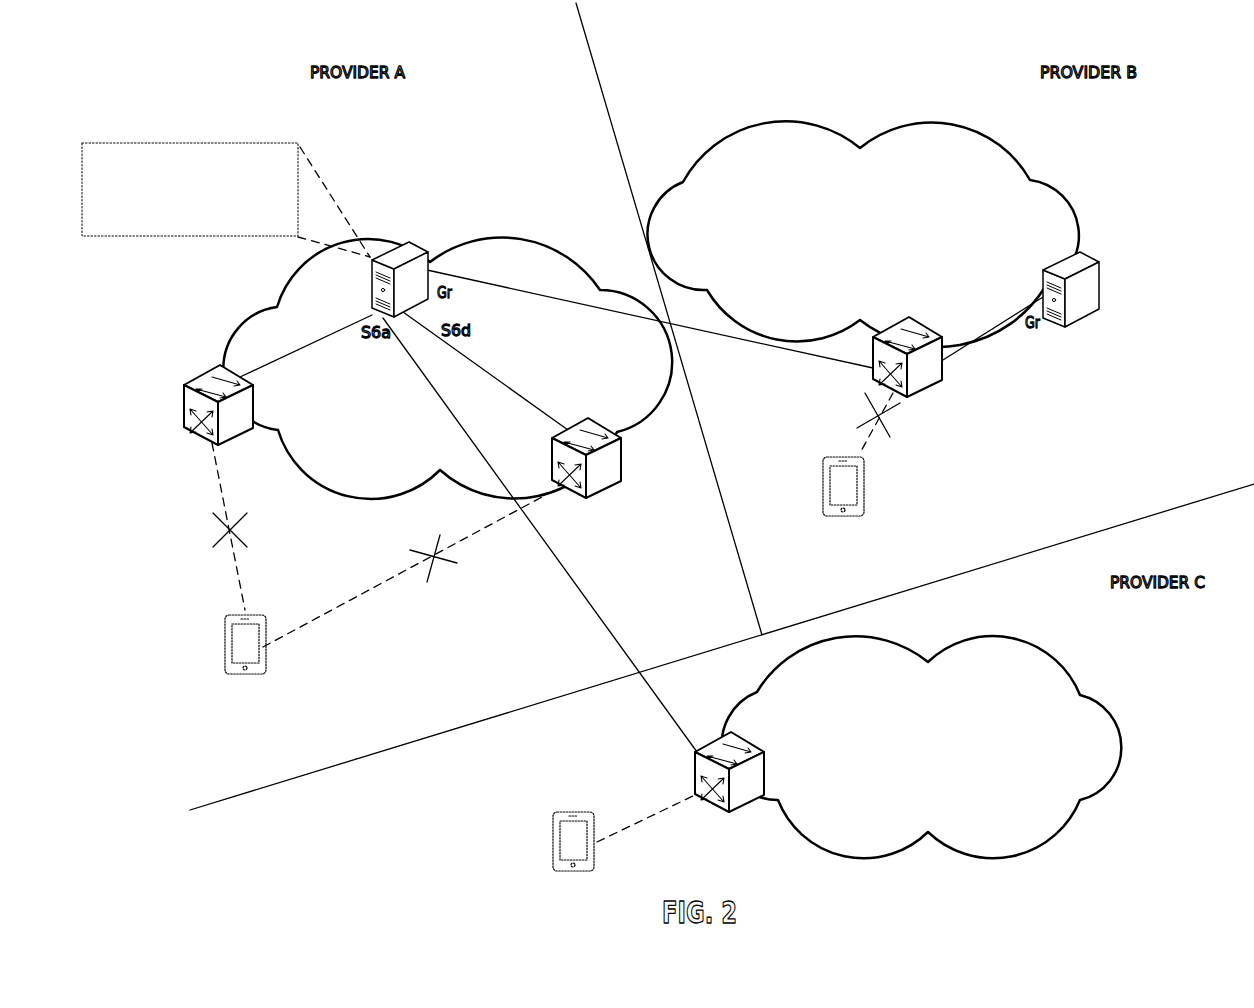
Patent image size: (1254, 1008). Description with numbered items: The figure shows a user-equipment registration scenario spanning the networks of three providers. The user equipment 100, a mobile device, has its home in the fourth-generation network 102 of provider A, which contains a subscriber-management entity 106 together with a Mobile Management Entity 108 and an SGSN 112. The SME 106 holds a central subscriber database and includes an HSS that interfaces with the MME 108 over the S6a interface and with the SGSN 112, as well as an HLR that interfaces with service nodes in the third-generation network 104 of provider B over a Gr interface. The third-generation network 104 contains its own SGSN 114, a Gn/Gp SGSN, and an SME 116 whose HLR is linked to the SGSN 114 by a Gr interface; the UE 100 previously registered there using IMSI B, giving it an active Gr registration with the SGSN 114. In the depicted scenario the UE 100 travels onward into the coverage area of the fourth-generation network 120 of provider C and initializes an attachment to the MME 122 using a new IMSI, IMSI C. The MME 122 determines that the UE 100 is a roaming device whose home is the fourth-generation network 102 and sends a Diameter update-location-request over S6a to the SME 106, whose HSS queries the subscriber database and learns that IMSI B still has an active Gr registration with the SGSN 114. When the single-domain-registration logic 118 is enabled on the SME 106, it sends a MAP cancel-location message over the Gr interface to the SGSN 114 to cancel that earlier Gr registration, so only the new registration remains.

The user equipment 100 is at (237, 673).
The 4G network 102 is at (453, 391).
The 3G network 104 is at (873, 256).
The subscriber-management entity 106 is at (418, 242).
The Mobile Management Entity 108 is at (186, 383).
The SGSN 112 is at (614, 420).
The SGSN 114 is at (897, 317).
The subscriber-management entity 116 is at (1082, 318).
The single-domain-registration logic 118 is at (202, 221).
The 4G network 120 is at (941, 770).
The MME 122 is at (743, 807).